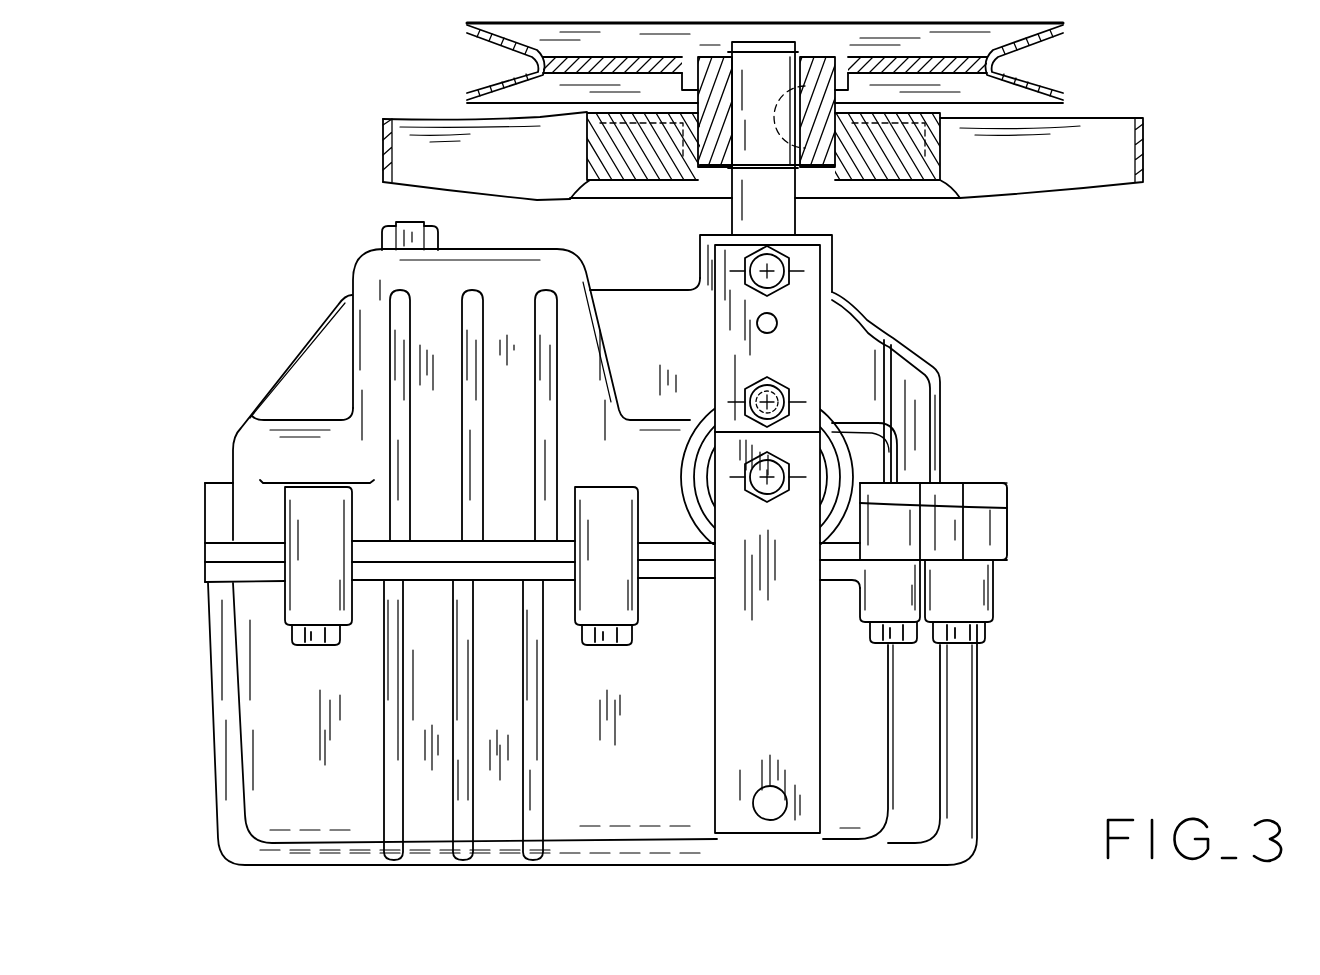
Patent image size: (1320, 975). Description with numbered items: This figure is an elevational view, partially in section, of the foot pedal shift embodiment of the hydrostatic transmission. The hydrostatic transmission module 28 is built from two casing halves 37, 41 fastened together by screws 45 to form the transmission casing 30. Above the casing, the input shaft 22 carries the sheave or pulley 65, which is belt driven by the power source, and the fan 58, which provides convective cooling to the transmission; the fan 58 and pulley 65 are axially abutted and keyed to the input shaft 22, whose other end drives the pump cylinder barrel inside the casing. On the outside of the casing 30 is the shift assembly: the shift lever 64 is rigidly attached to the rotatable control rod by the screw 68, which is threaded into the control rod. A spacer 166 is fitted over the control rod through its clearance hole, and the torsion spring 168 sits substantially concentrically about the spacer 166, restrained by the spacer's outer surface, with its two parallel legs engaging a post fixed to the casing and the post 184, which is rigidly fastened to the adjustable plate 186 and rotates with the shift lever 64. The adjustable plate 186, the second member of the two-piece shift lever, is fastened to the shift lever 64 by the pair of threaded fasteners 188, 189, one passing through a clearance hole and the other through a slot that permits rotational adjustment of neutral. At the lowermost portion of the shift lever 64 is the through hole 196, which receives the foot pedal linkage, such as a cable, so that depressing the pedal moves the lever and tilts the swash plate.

The pulley 65 is at (1063, 27).
The fan 58 is at (1143, 150).
The input shaft 22 is at (762, 140).
The post 184 is at (757, 333).
The threaded fastener 188 is at (783, 265).
The adjustable plate 186 is at (803, 303).
The threaded fastener 189 is at (781, 382).
The casing half 37 is at (912, 346).
The torsion spring 168 is at (835, 435).
The hydrostatic transmission module 28 is at (1010, 447).
The screw 68 is at (793, 466).
The spacer 166 is at (965, 508).
The transmission casing 30 is at (1010, 591).
The screws 45 is at (320, 645).
The casing half 41 is at (965, 778).
The through hole 196 is at (764, 812).
The shift lever 64 is at (793, 820).